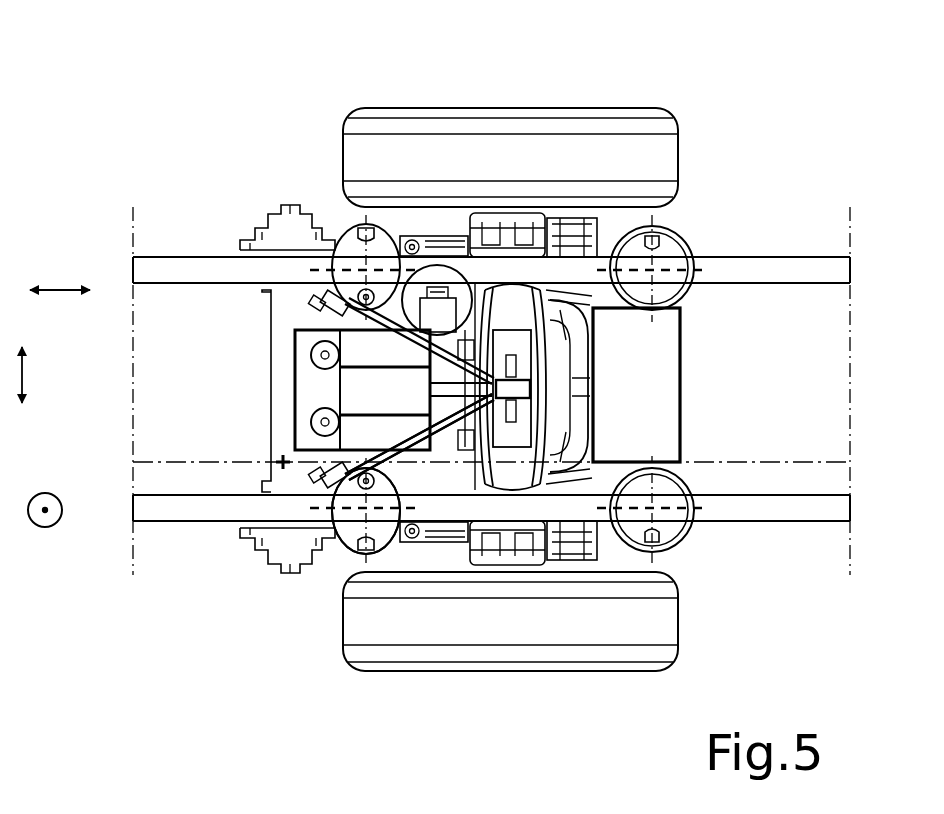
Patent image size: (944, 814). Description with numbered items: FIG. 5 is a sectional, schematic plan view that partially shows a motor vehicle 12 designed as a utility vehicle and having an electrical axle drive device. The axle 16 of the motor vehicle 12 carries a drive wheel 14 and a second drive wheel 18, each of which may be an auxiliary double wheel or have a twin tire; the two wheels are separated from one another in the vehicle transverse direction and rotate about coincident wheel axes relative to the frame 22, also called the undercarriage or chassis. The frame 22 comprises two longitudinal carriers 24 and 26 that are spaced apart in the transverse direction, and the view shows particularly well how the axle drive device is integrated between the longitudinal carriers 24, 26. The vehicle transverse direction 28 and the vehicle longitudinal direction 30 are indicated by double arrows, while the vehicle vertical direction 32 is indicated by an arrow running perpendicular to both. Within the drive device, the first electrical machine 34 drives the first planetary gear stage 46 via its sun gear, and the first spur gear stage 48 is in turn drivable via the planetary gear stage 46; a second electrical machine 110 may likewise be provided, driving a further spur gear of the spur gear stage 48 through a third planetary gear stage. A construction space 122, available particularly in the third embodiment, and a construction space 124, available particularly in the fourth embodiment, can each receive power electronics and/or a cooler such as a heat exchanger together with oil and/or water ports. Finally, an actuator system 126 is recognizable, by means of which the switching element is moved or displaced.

The motor vehicle 12 is at (708, 93).
The drive wheel 14 is at (517, 662).
The axle 16 is at (602, 715).
The second drive wheel 18 is at (648, 98).
The frame 22 is at (838, 254).
The longitudinal carrier 24 is at (748, 523).
The longitudinal carrier 26 is at (752, 268).
The vehicle transverse direction 28 is at (24, 375).
The vehicle longitudinal direction 30 is at (60, 290).
The vehicle vertical direction 32 is at (62, 508).
The first electrical machine 34 is at (352, 486).
The first planetary gear stage 46 is at (390, 357).
The first spur gear stage 48 is at (356, 315).
The second electrical machine 110 is at (413, 474).
The construction space 122 is at (681, 378).
The construction space 124 is at (293, 390).
The actuator system 126 is at (447, 293).